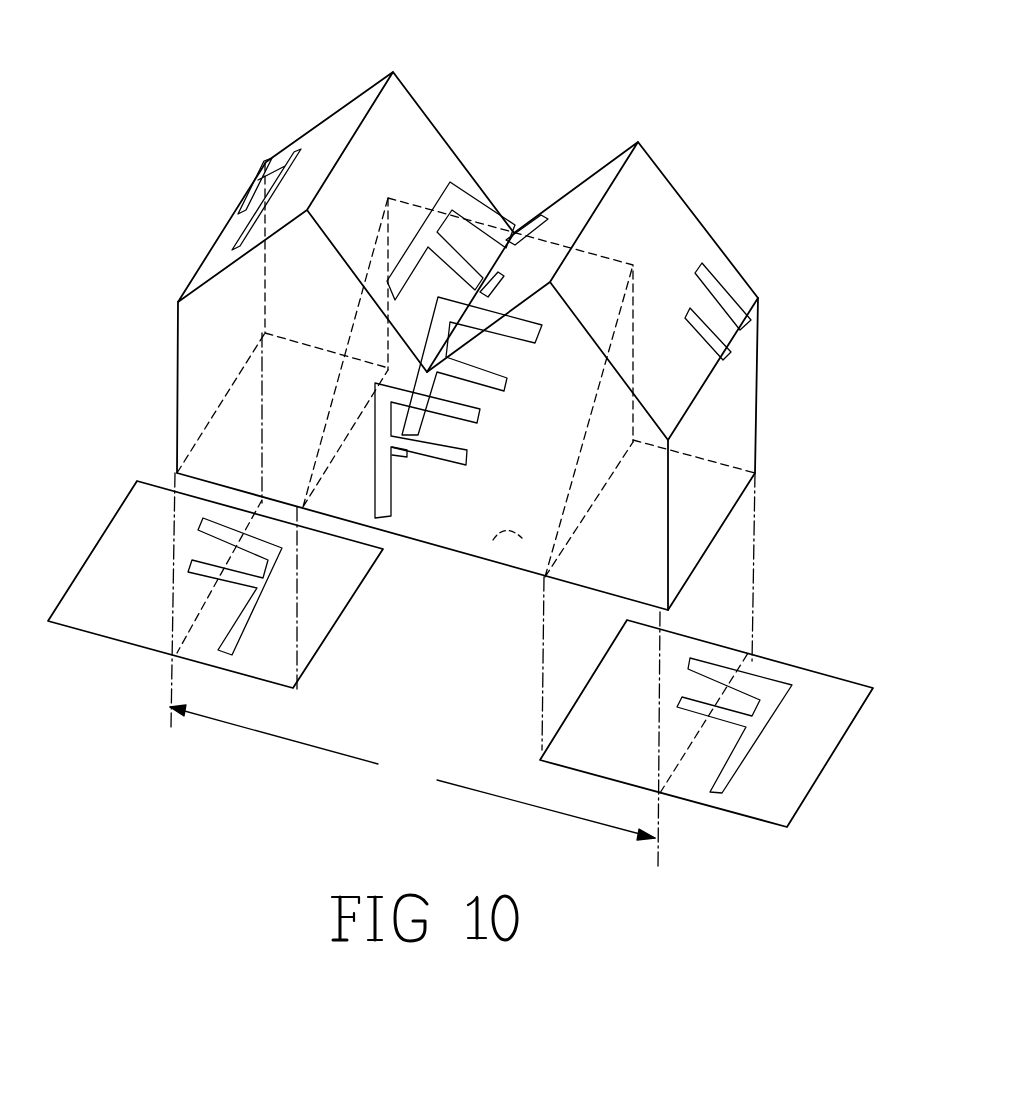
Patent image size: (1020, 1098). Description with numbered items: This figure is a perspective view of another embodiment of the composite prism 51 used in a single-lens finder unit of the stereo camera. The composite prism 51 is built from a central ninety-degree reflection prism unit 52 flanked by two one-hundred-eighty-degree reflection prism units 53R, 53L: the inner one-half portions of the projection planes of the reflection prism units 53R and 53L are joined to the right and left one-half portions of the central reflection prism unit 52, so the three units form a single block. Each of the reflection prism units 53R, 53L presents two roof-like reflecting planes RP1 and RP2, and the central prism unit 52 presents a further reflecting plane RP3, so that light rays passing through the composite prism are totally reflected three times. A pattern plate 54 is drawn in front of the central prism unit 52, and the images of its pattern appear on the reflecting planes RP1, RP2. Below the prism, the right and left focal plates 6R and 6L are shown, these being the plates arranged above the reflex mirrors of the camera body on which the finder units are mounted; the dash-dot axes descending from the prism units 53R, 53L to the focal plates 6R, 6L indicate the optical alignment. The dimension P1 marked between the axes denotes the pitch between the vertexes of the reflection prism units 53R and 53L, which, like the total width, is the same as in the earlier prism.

The composite prism 51 is at (467, 324).
The central 90-degree reflection prism unit 52 is at (455, 555).
The 180-degree reflection prism unit 53L is at (366, 92).
The 180-degree reflection prism unit 53R is at (643, 140).
The pattern plate 54 is at (413, 522).
The first reflecting plane RP1 is at (314, 142).
The second reflecting plane RP2 is at (413, 128).
The third reflecting plane RP3 is at (493, 540).
The focal plate 6L is at (85, 620).
The focal plate 6R is at (742, 802).
The pitch between light receiving elements P1 is at (412, 772).